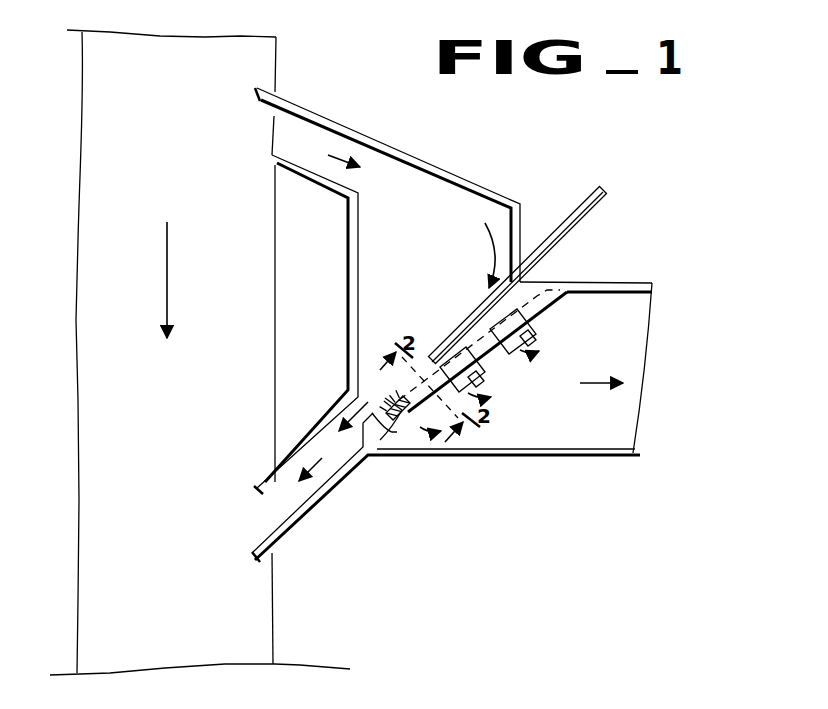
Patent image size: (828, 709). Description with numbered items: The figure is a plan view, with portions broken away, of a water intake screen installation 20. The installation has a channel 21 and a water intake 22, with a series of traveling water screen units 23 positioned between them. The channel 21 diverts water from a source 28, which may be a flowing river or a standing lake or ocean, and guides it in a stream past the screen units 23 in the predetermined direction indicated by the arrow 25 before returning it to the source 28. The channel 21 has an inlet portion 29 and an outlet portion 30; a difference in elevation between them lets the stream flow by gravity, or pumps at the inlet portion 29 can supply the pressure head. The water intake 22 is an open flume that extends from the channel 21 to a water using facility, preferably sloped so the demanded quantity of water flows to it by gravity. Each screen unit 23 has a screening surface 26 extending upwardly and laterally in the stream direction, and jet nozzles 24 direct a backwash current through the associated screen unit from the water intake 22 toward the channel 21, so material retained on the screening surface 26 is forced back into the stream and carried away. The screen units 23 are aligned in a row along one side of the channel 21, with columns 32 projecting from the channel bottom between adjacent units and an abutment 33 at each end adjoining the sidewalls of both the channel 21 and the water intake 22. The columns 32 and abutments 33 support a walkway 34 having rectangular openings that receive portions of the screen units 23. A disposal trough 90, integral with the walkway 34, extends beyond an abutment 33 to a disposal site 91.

The water intake screen installation 20 is at (537, 191).
The channel 21 is at (441, 257).
The water intake 22 is at (638, 377).
The traveling water screen units 23 is at (483, 376).
The jet nozzles 24 is at (411, 399).
The arrow 25 is at (352, 420).
The screening surface 26 is at (378, 448).
The source 28 is at (183, 211).
The inlet portion 29 is at (290, 118).
The outlet portion 30 is at (298, 502).
The columns 32 is at (430, 356).
The abutment 33 is at (538, 312).
The walkway 34 is at (523, 335).
The disposal trough 90 is at (582, 221).
The disposal site 91 is at (622, 190).